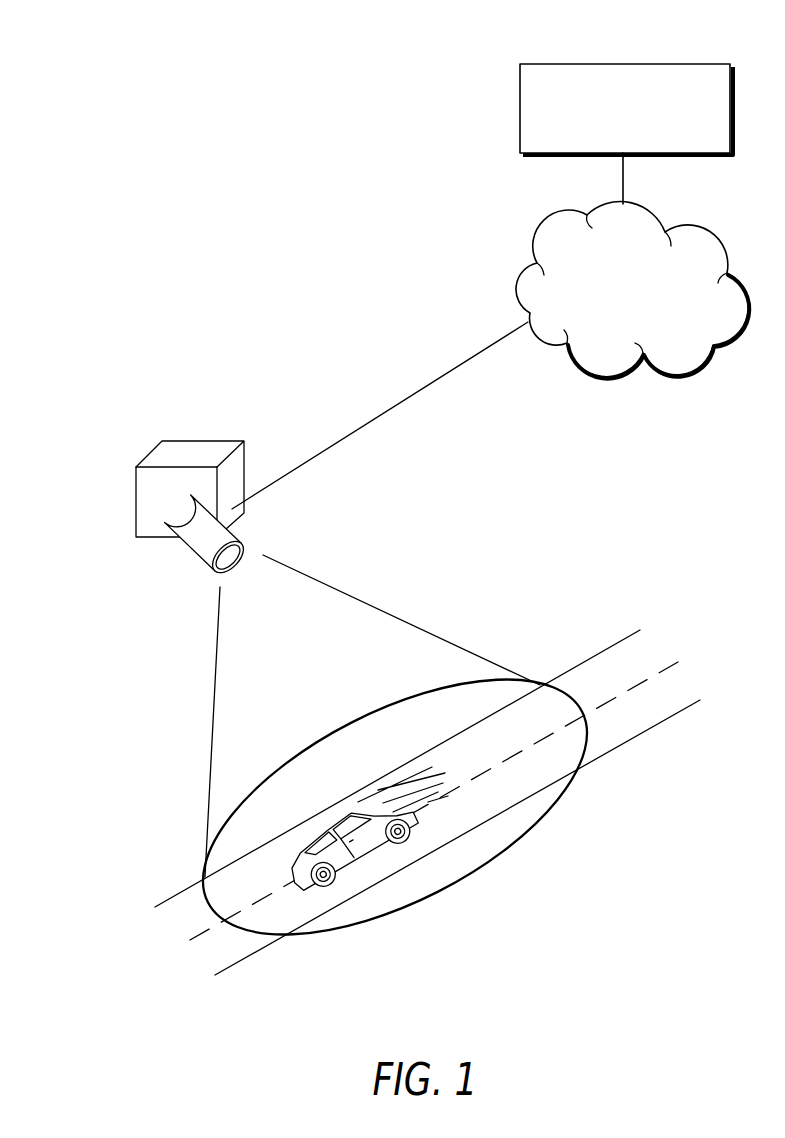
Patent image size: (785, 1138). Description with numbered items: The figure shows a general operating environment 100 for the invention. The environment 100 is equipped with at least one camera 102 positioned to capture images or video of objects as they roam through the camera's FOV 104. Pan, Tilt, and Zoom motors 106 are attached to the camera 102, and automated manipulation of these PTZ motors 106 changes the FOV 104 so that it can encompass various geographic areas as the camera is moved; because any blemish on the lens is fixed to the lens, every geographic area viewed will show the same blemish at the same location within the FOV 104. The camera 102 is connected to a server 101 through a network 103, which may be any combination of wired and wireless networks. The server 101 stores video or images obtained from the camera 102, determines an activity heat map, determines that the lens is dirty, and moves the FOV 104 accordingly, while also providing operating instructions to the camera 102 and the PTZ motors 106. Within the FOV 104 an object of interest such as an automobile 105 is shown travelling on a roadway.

The operating environment 100 is at (71, 48).
The server 101 is at (520, 106).
The camera 102 is at (197, 555).
The network 103 is at (570, 217).
The FOV 104 is at (371, 770).
The automobile 105 is at (343, 868).
The Pan, Tilt, and Zoom (PTZ) motors 106 is at (204, 440).